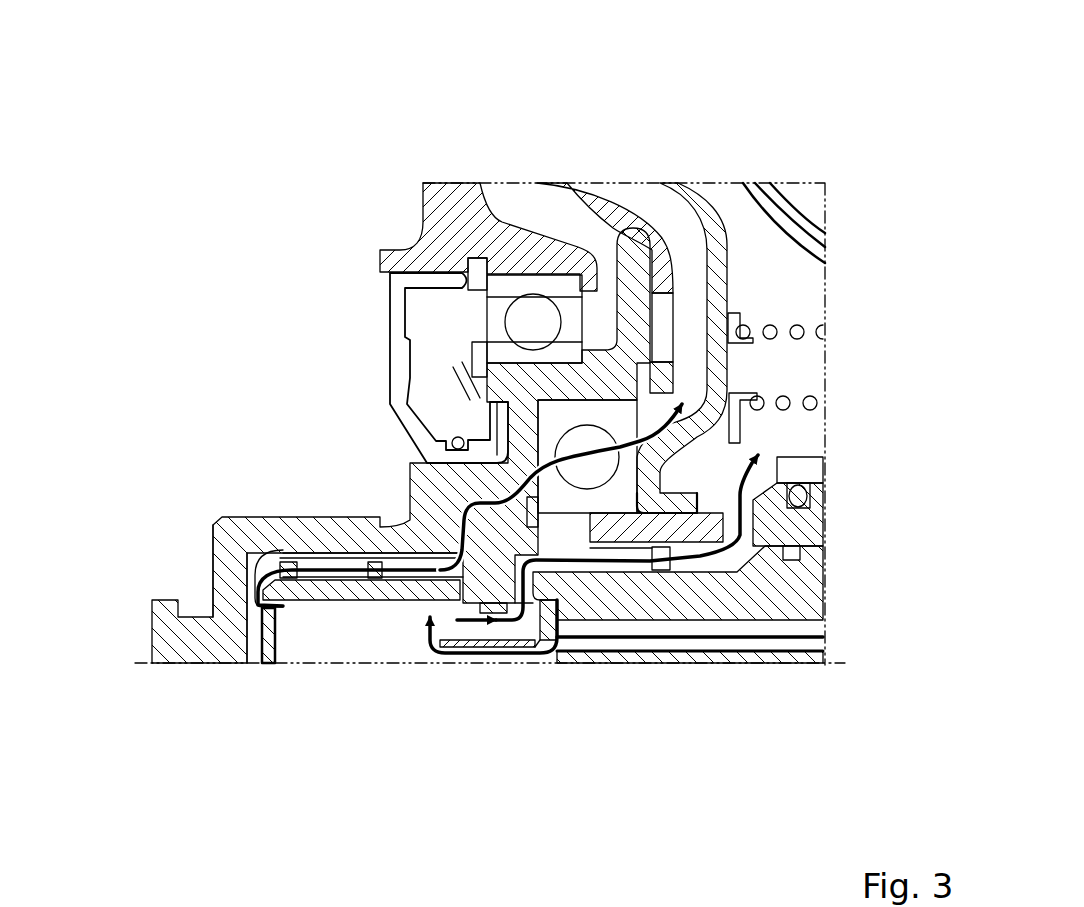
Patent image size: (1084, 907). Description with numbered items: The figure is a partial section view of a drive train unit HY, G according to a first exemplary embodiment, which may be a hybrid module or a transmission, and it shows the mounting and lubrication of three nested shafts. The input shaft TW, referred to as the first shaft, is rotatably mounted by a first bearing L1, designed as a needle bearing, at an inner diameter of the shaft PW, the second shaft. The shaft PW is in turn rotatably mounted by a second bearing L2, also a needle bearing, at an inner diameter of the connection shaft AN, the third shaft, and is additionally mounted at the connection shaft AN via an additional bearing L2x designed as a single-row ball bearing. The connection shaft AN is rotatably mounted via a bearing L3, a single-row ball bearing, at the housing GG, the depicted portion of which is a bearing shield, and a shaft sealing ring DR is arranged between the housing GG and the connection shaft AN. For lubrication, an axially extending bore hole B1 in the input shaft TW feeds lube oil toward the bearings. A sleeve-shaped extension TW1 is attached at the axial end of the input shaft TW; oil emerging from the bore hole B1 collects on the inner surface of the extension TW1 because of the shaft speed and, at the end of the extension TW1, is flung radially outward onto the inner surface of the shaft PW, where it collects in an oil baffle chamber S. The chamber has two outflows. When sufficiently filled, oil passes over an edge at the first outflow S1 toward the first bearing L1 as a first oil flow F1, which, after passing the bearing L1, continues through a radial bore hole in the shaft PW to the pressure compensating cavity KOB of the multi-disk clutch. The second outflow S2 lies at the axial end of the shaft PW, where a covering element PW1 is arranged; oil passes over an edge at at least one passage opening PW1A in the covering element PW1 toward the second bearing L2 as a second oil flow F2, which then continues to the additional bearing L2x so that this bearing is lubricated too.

The hybrid module HY is at (782, 146).
The transmission G is at (500, 428).
The housing GG is at (455, 222).
The pressure compensating cavity KOB is at (772, 275).
The shaft PW is at (680, 490).
The bearing L3 is at (520, 325).
The shaft sealing ring DR is at (403, 349).
The additional bearing L2x is at (570, 450).
The connection shaft AN is at (330, 527).
The second bearing L2 is at (245, 527).
The covering element PW1 is at (282, 622).
The passage opening PW1A is at (255, 610).
The second outflow S2 is at (312, 592).
The oil baffle chamber S is at (360, 628).
The second oil flow F2 is at (455, 568).
The first outflow S1 is at (470, 640).
The sleeve-shaped extension TW1 is at (518, 642).
The first bearing L1 is at (612, 548).
The first oil flow F1 is at (720, 560).
The bore hole B1 is at (727, 640).
The input shaft TW is at (775, 583).